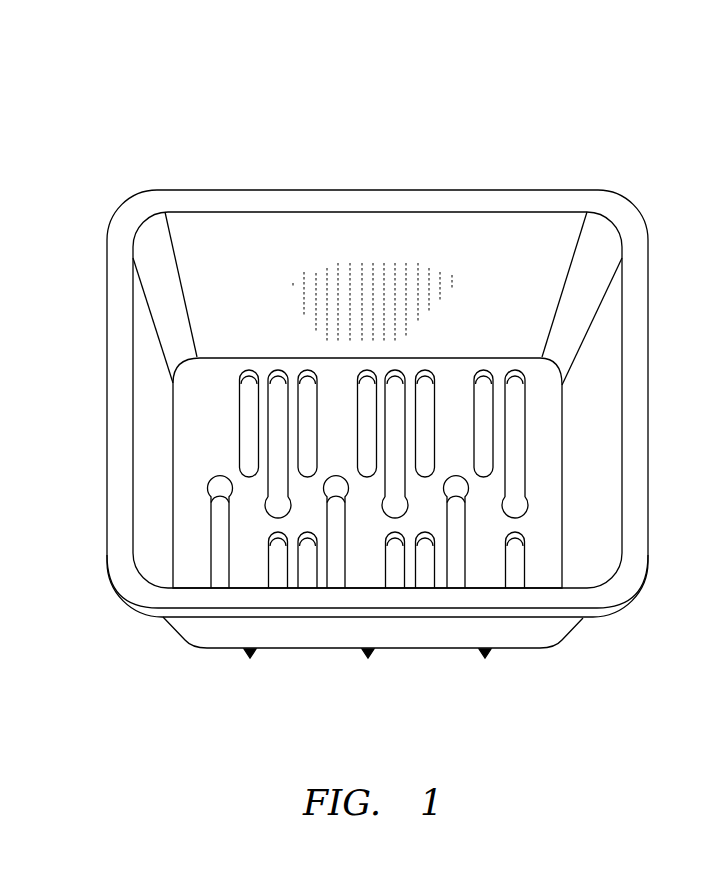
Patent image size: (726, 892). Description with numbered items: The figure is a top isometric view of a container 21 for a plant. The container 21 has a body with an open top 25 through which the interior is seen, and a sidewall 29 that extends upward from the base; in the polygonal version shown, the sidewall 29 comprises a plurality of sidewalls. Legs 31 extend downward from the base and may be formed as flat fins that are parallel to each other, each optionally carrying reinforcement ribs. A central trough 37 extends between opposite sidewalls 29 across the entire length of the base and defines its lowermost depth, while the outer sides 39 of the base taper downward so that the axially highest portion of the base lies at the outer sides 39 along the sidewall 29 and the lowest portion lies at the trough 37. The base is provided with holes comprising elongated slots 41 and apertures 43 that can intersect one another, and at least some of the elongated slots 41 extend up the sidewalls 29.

The container 21 is at (228, 100).
The open top 25 is at (388, 250).
The sidewall 29 is at (550, 632).
The legs 31 is at (250, 657).
The trough 37 is at (144, 525).
The outer sides 39 is at (545, 568).
The elongated slots 41 is at (262, 575).
The apertures 43 is at (207, 505).